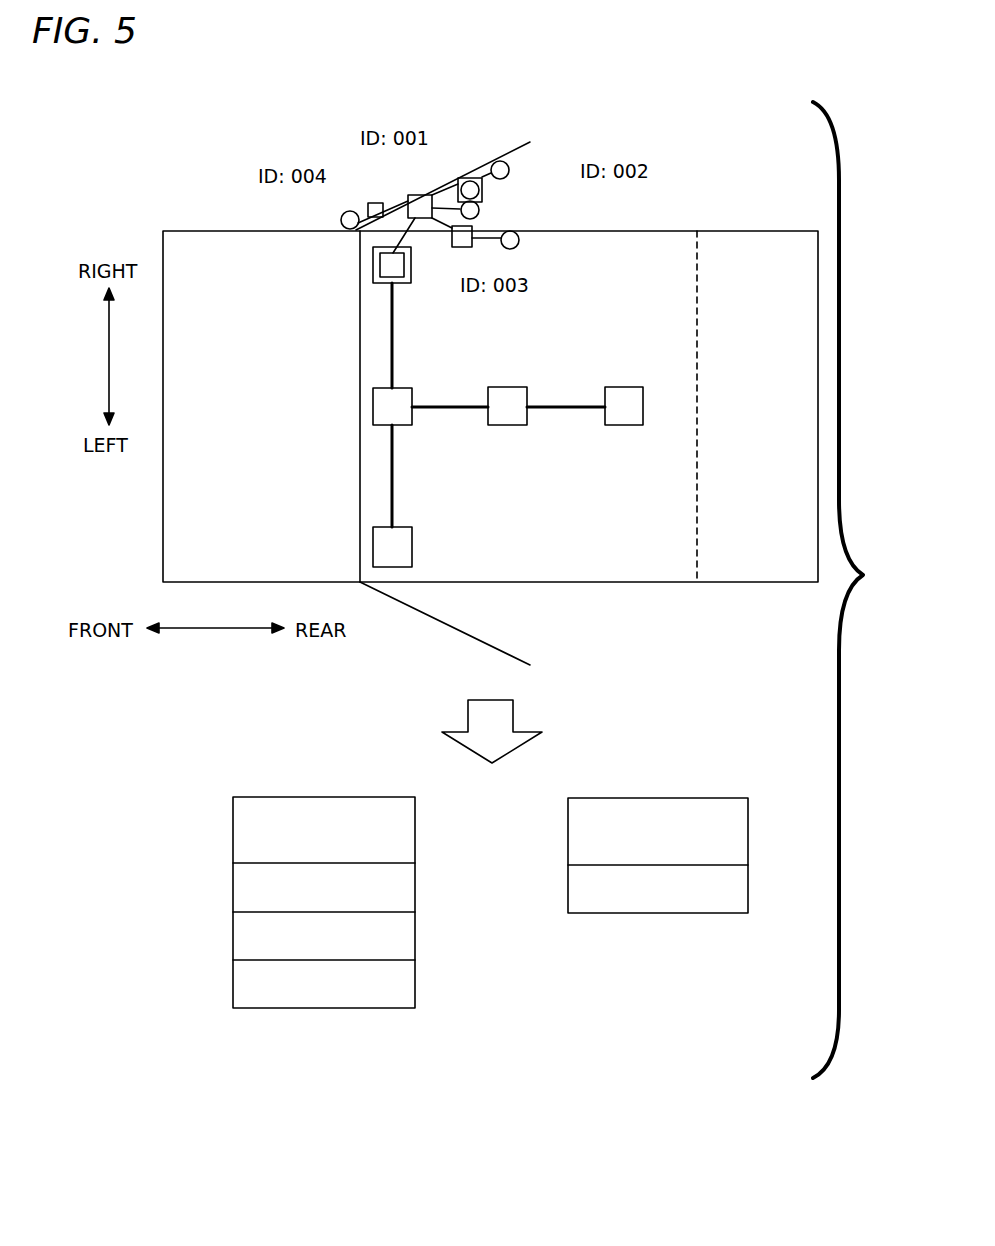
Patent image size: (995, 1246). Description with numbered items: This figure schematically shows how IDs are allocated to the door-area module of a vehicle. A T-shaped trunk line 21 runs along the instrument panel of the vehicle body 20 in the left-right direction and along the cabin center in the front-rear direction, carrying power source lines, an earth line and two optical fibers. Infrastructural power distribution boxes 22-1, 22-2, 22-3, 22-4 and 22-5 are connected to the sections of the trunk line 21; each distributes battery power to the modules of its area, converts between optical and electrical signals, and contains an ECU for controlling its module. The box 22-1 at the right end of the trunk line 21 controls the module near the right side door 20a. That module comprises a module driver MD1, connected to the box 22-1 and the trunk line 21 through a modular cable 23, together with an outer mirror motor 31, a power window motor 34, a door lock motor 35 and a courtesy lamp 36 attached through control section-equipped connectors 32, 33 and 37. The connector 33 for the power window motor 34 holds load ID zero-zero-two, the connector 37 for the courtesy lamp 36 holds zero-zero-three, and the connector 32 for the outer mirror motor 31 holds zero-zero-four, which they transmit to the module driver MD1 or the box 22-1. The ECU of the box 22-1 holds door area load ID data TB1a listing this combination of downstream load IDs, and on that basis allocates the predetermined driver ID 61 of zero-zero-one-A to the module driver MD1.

The vehicle body 20 is at (680, 231).
The right side door 20a is at (513, 148).
The trunk line 21 is at (423, 409).
The infrastructural power distribution box 22-1 is at (373, 270).
The infrastructural power distribution box 22-2 is at (373, 405).
The infrastructural power distribution box 22-3 is at (373, 547).
The infrastructural power distribution box 22-4 is at (508, 425).
The infrastructural power distribution box 22-5 is at (623, 425).
The modular cable 23 is at (403, 236).
The outer mirror motor 31 is at (341, 217).
The control section-equipped connector 32 is at (370, 203).
The control section-equipped connector 33 is at (469, 180).
The power window motor 34 is at (510, 170).
The door lock motor 35 is at (480, 210).
The courtesy lamp 36 is at (518, 247).
The control section-equipped connector 37 is at (458, 248).
The module driver MD1 is at (418, 195).
The door area load ID data TB1a is at (282, 793).
The driver ID 61 is at (690, 798).